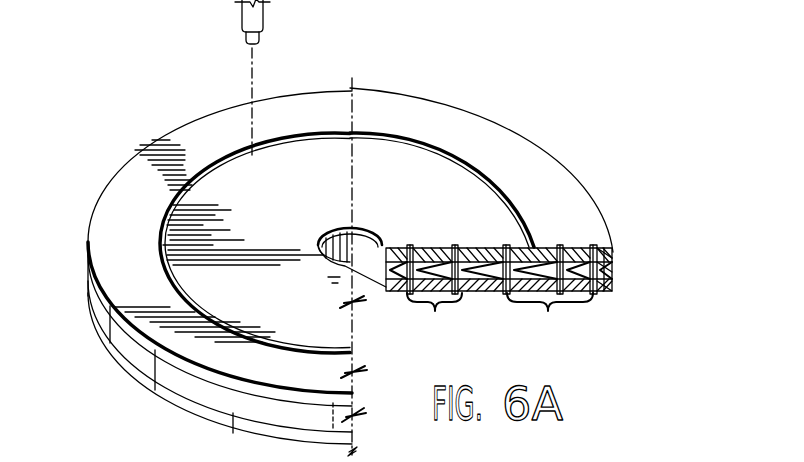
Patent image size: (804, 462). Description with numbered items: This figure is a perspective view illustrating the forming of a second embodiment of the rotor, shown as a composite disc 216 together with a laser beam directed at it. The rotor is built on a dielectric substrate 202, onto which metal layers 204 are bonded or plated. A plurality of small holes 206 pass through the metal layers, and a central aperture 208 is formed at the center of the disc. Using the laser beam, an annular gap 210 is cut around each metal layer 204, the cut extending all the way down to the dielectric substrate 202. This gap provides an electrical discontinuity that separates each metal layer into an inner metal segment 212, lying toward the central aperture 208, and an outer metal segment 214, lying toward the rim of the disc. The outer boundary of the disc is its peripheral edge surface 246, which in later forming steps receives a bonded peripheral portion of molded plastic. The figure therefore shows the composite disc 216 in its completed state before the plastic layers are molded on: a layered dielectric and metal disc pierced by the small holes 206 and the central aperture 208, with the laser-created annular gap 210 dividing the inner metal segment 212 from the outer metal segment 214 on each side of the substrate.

The composite disc 216 is at (489, 114).
The central aperture 208 is at (350, 228).
The dielectric substrate 202 is at (607, 273).
The inner metal segment 212 is at (475, 247).
The annular gap 210 is at (537, 247).
The outer metal segment 214 is at (573, 250).
The metal layers 204 is at (613, 257).
The peripheral edge surface 246 is at (613, 290).
The small holes 206 is at (500, 321).